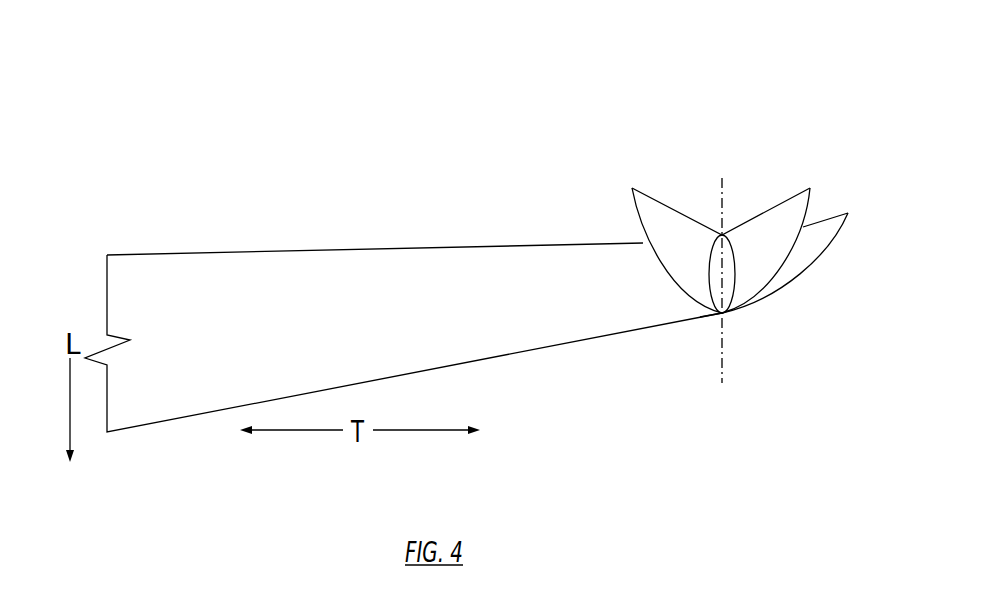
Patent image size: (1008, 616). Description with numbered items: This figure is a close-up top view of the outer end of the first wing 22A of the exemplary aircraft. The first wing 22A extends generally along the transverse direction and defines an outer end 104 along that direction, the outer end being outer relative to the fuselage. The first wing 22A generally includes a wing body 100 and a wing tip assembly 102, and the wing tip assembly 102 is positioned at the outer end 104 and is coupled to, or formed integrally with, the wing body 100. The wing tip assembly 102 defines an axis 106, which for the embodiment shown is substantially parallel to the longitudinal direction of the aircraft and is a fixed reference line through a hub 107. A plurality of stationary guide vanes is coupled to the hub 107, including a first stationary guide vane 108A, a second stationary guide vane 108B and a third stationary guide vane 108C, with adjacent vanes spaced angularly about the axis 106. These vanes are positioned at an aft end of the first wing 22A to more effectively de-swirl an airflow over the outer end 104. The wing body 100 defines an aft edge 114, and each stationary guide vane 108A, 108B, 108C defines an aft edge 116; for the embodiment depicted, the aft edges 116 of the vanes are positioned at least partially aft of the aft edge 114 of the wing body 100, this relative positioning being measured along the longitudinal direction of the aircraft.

The first wing 22A is at (563, 67).
The wing body 100 is at (433, 258).
The wing tip assembly 102 is at (829, 133).
The outer end 104 is at (685, 340).
The axis 106 is at (722, 337).
The hub 107 is at (733, 277).
The first stationary guide vane 108A is at (653, 267).
The second stationary guide vane 108B is at (810, 207).
The third stationary guide vane 108C is at (830, 243).
The aft edge 114 is at (573, 235).
The aft edge 116 is at (680, 200).